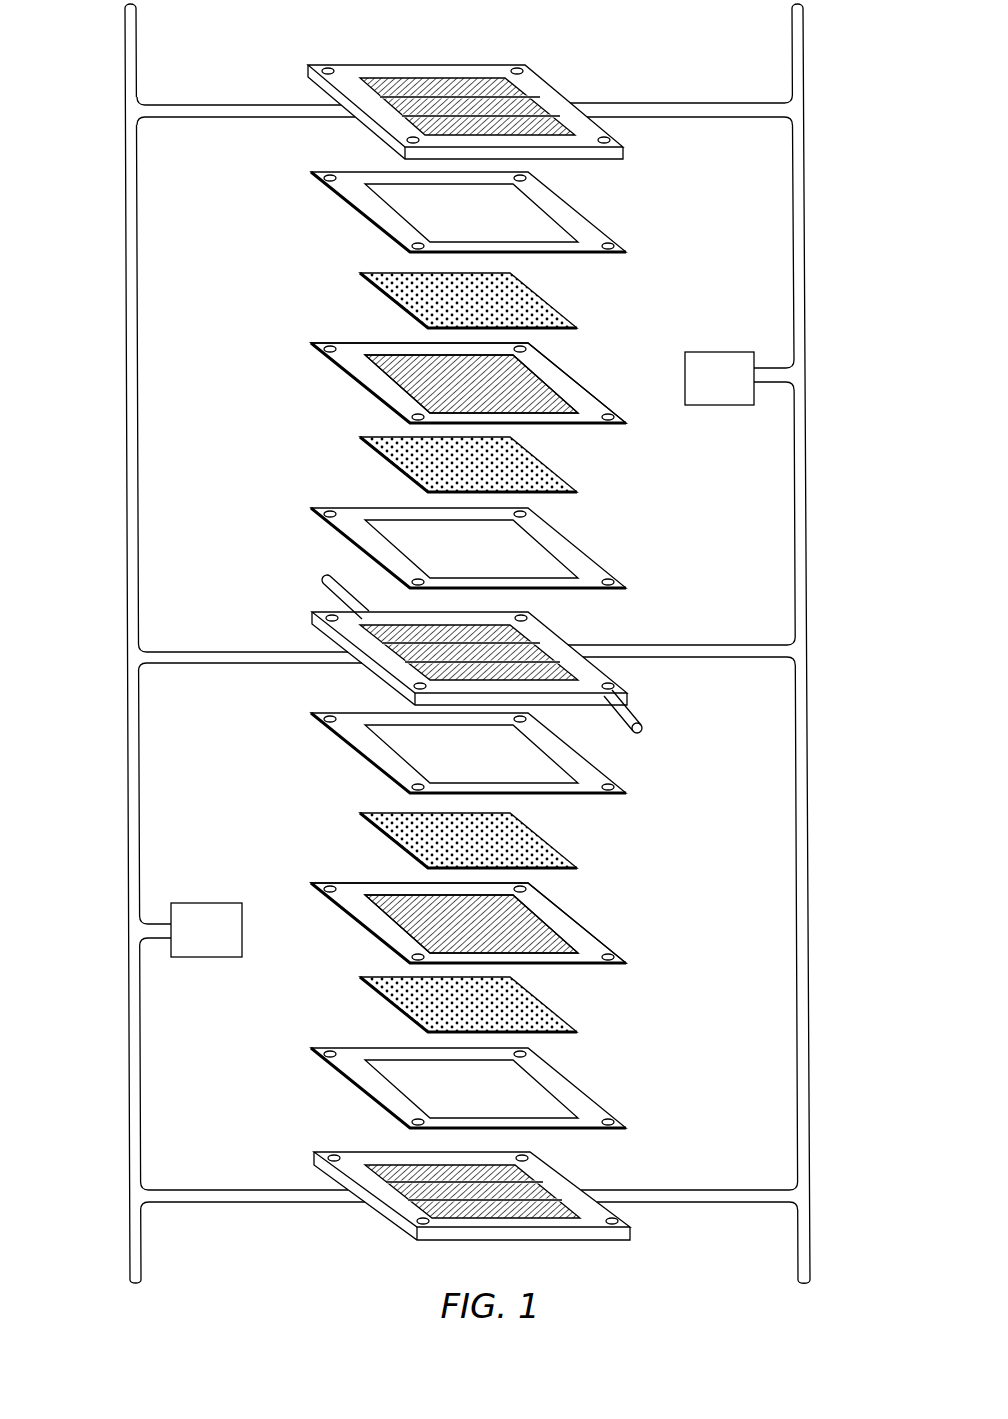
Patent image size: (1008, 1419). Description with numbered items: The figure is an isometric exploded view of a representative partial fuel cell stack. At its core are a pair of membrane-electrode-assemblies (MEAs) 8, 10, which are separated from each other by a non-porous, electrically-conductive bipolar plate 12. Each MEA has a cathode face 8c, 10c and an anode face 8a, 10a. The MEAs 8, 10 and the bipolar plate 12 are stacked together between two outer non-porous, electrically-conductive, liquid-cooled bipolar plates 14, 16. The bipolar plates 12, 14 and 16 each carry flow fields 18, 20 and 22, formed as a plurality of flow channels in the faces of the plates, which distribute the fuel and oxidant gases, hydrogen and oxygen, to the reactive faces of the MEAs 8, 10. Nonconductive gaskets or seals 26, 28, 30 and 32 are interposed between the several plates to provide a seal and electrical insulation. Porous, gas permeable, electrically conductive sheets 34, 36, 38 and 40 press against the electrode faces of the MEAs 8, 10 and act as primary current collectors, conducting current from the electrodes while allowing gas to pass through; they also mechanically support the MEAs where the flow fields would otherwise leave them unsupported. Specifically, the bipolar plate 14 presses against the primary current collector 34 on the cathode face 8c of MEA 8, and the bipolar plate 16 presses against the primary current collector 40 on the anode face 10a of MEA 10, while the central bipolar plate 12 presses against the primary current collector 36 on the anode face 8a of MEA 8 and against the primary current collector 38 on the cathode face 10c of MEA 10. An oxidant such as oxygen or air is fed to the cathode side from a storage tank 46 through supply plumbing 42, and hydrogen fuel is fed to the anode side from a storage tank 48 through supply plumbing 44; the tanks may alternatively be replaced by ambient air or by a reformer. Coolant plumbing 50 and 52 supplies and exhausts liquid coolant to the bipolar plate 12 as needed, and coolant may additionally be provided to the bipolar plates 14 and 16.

The membrane-electrode-assembly 8 is at (433, 402).
The anode face 8a is at (562, 417).
The cathode face 8c is at (534, 378).
The membrane-electrode-assembly 10 is at (494, 897).
The anode face 10a is at (386, 933).
The cathode face 10c is at (395, 899).
The bipolar plate 12 is at (456, 648).
The bipolar plate 14 is at (412, 86).
The bipolar plate 16 is at (490, 1201).
The flow field 18 is at (540, 642).
The flow field 20 is at (540, 92).
The flow field 22 is at (372, 1220).
The gasket 26 is at (378, 207).
The gasket 28 is at (382, 528).
The gasket 30 is at (590, 777).
The gasket 32 is at (573, 1104).
The primary current collector 34 is at (388, 286).
The primary current collector 36 is at (392, 451).
The primary current collector 38 is at (556, 851).
The primary current collector 40 is at (546, 1012).
The supply plumbing 42 is at (802, 498).
The supply plumbing 44 is at (128, 1068).
The oxygen storage tank 46 is at (717, 352).
The hydrogen storage tank 48 is at (213, 903).
The coolant plumbing 50 is at (326, 582).
The coolant plumbing 52 is at (630, 719).